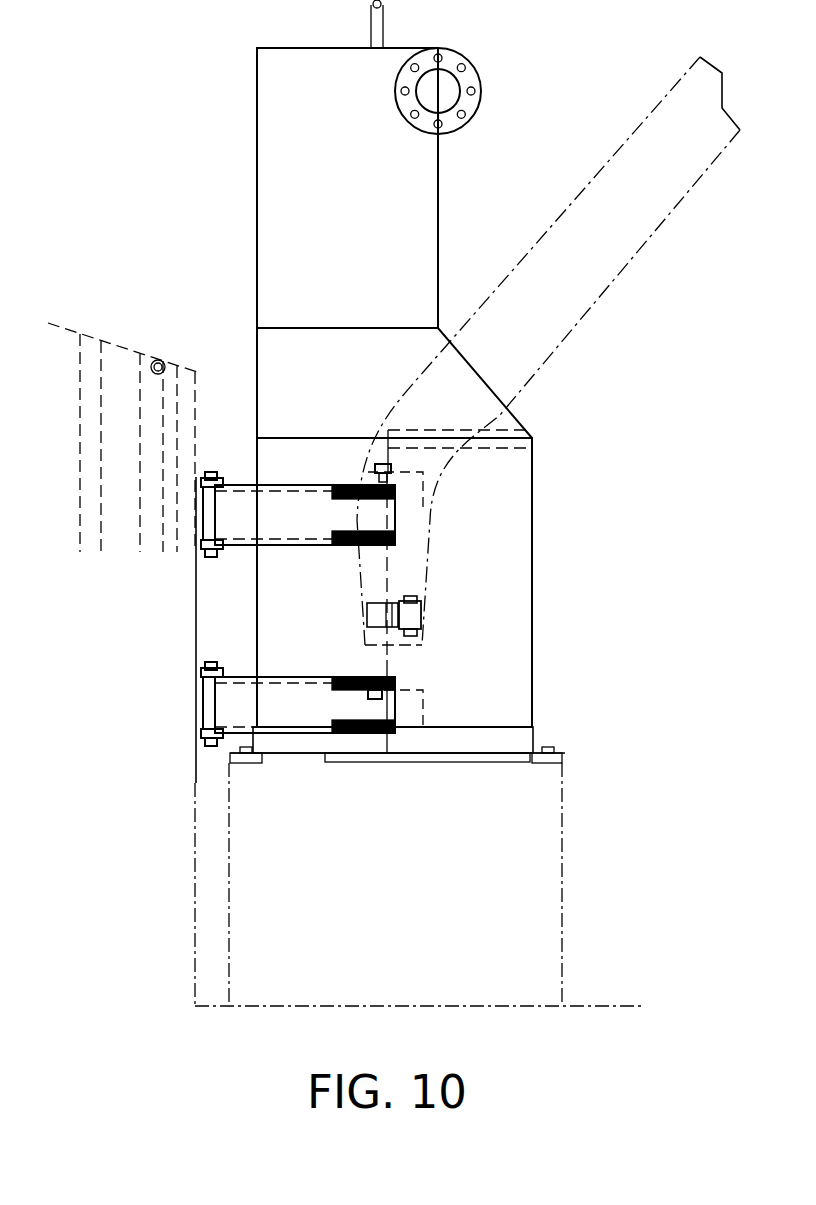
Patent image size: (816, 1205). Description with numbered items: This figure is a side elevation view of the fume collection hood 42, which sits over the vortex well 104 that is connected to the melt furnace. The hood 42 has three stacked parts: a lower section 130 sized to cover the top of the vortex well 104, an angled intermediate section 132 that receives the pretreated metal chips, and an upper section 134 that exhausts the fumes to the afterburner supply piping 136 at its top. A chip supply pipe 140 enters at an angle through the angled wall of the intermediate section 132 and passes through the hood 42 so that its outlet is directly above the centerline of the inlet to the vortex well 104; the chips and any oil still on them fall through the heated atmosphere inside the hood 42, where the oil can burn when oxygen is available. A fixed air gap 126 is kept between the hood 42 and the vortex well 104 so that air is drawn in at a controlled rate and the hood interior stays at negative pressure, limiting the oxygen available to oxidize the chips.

The fume collection hood 42 is at (233, 179).
The vortex well 104 is at (287, 953).
The fixed air gap 126 is at (427, 755).
The lower section 130 is at (516, 532).
The angled intermediate section 132 is at (257, 365).
The upper section 134 is at (430, 216).
The afterburner supply piping 136 is at (480, 103).
The chip supply pipe 140 is at (590, 277).